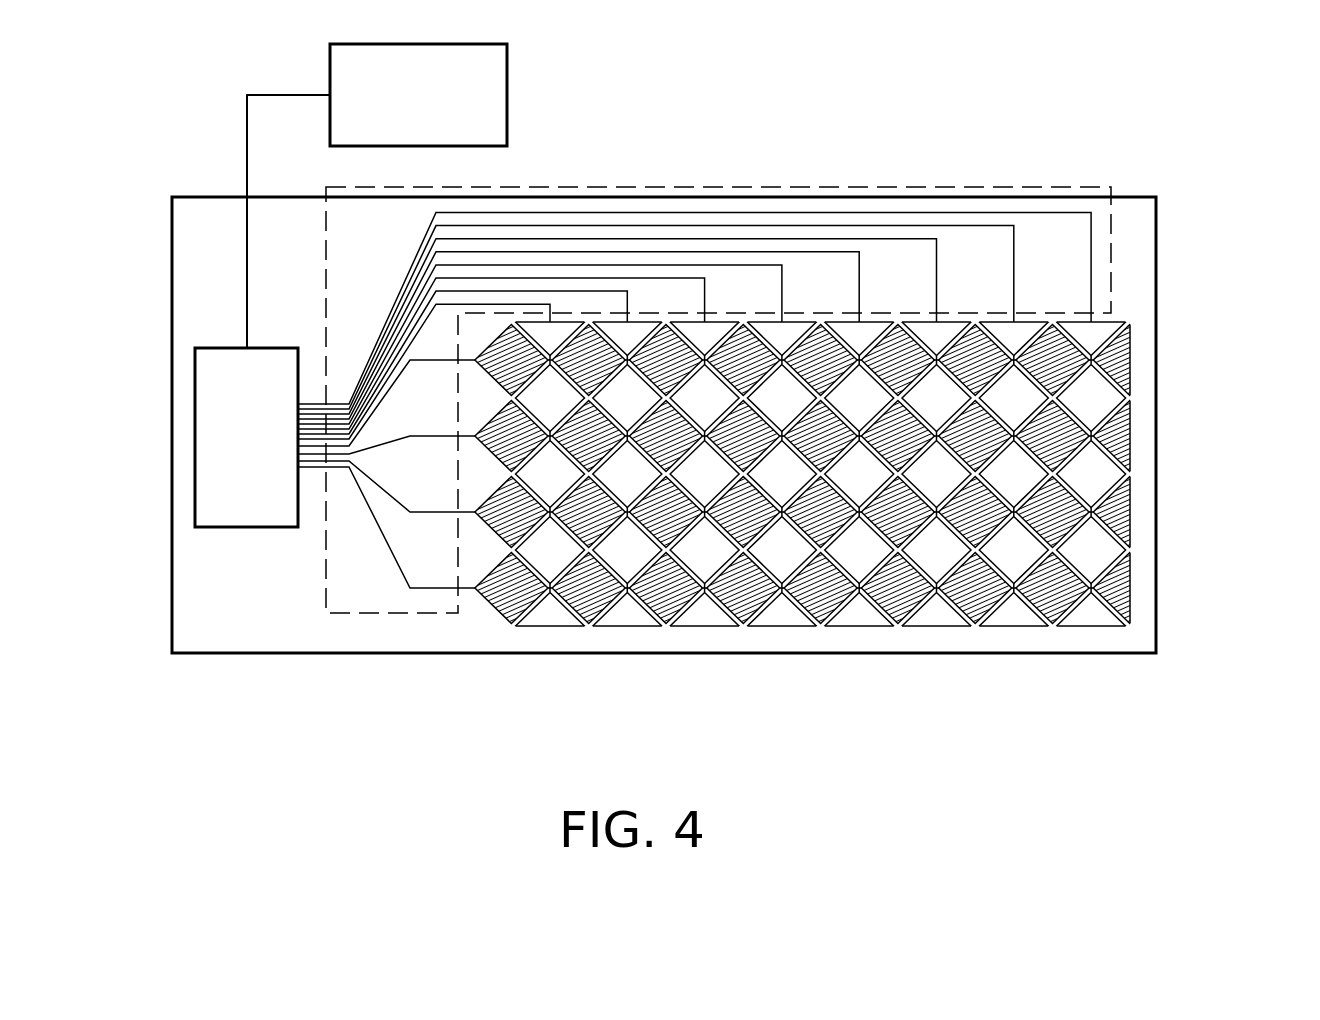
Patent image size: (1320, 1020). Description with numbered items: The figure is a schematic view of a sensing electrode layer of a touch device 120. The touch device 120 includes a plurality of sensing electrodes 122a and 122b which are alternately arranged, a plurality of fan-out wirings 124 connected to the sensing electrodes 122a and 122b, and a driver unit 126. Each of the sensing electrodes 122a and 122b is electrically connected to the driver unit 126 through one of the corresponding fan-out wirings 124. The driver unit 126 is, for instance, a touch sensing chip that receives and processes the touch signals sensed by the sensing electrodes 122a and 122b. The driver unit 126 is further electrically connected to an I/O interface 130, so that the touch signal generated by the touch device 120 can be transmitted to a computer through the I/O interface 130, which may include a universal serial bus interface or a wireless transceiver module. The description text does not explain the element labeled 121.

The touch device 120 is at (705, 380).
The substrate 121 is at (1133, 255).
The sensing electrode 122a is at (1177, 588).
The sensing electrode 122b is at (1094, 677).
The fan-out wiring 124 is at (402, 613).
The driver unit 126 is at (275, 455).
The I/O interface 130 is at (448, 108).